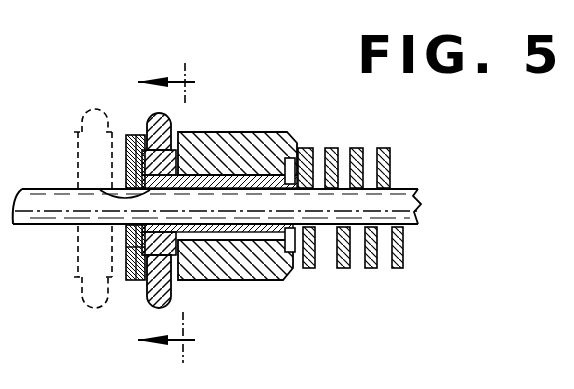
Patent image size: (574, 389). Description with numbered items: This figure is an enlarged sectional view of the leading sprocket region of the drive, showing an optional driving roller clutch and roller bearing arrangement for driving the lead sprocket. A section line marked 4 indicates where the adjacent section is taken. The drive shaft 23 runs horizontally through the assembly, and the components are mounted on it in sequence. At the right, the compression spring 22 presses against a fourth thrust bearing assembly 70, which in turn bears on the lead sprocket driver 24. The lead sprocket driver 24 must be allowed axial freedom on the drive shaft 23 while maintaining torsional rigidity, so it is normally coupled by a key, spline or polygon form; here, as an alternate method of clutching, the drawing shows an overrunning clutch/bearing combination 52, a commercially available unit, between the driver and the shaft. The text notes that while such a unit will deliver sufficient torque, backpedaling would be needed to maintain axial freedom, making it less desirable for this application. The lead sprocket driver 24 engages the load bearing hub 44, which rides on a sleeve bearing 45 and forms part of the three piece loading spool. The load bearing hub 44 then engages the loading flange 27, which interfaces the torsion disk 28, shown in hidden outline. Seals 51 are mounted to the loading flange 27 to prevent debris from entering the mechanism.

The compression spring 22 is at (356, 148).
The drive shaft 23 is at (413, 207).
The lead sprocket driver 24 is at (224, 280).
The loading flange 27 is at (133, 142).
The torsion disk 28 is at (123, 130).
The load bearing hub 44 is at (123, 247).
The sleeve bearing 45 is at (100, 188).
The seal 51 is at (186, 165).
The overrunning clutch/bearing combination 52 is at (254, 173).
The fourth thrust bearing assembly 70 is at (283, 278).
The section line 4- 4 is at (176, 213).